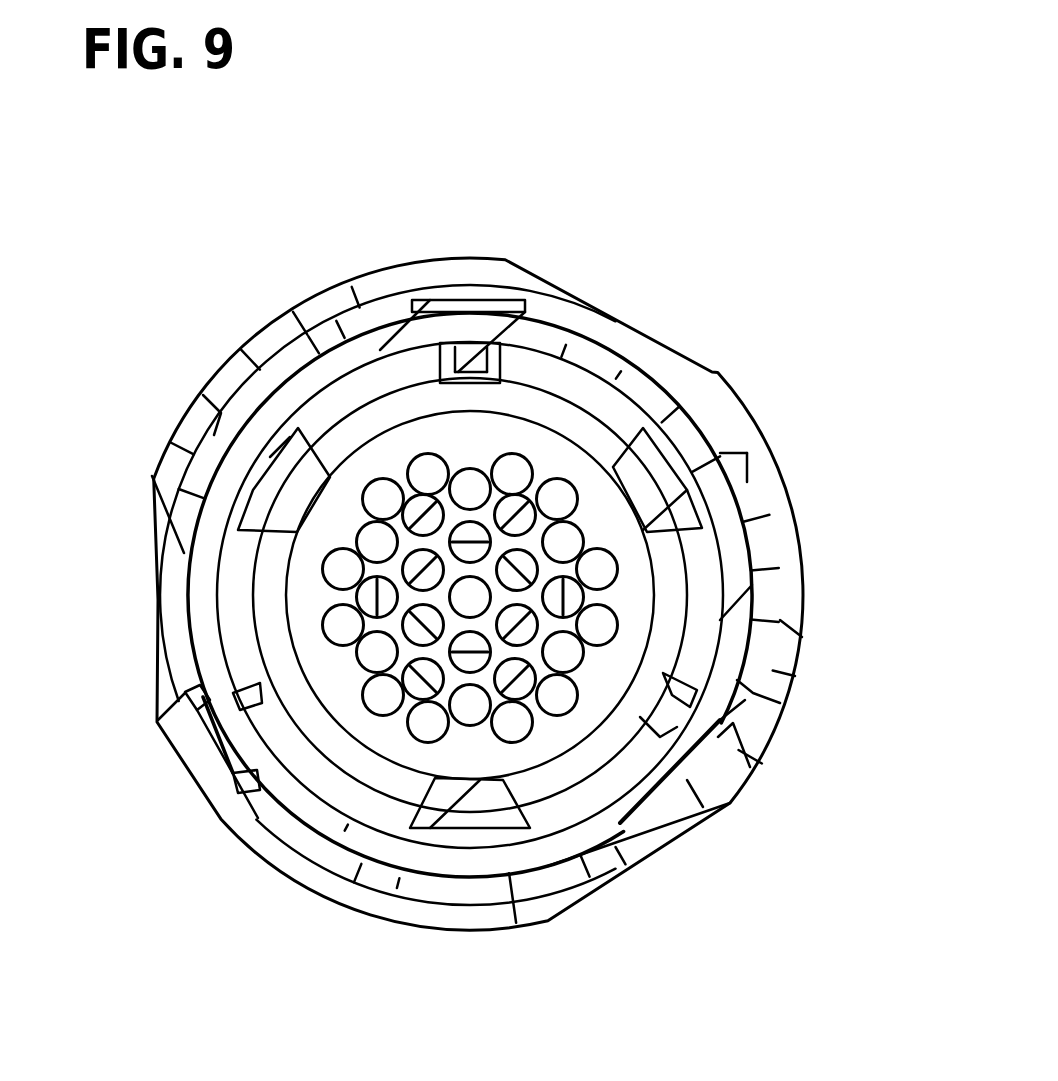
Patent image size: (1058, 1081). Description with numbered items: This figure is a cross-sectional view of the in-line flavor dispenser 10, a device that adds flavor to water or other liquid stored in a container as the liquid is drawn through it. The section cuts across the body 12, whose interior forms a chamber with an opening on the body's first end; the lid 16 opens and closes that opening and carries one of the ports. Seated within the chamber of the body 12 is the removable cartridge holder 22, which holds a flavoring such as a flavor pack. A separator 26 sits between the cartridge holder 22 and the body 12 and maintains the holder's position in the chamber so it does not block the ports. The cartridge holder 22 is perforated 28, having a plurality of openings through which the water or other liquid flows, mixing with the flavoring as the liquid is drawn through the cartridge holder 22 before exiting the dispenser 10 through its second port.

The in-line flavor dispenser 10 is at (859, 279).
The body 12 is at (451, 594).
The lid 16 is at (471, 594).
The removable cartridge holder 22 is at (371, 651).
The separator 26 is at (243, 493).
The perforations 28 is at (631, 784).